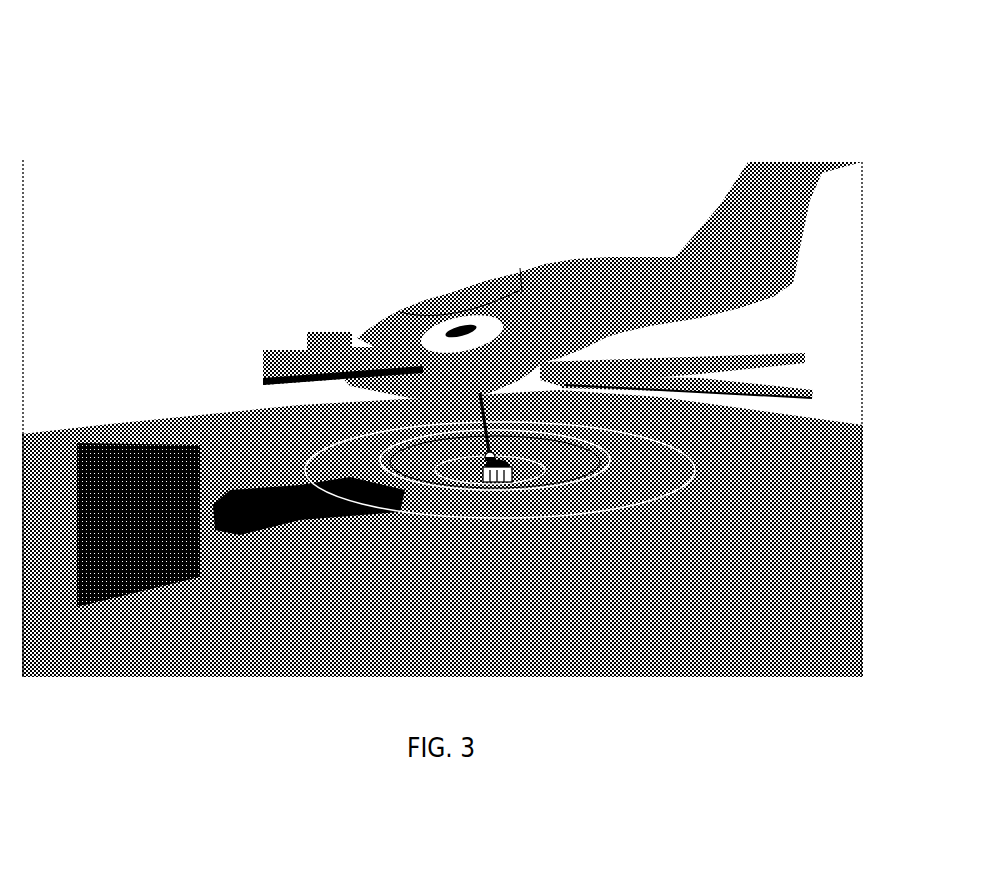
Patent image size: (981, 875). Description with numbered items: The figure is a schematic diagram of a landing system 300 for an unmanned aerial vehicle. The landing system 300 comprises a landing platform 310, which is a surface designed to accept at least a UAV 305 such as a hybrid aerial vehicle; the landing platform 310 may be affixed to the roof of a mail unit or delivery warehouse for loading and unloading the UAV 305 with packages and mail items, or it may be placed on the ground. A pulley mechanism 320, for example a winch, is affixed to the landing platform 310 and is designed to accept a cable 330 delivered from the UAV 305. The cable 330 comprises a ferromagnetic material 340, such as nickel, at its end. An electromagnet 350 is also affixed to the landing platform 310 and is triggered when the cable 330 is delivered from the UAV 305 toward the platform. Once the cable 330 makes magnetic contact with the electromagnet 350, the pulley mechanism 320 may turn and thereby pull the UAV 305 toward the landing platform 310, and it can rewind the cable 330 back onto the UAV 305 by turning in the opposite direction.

The landing system 300 is at (860, 78).
The UAV 305 is at (558, 257).
The landing platform 310 is at (665, 477).
The pulley mechanism 320 is at (478, 480).
The cable 330 is at (505, 405).
The ferromagnetic material 340 is at (497, 452).
The electromagnet 350 is at (484, 470).